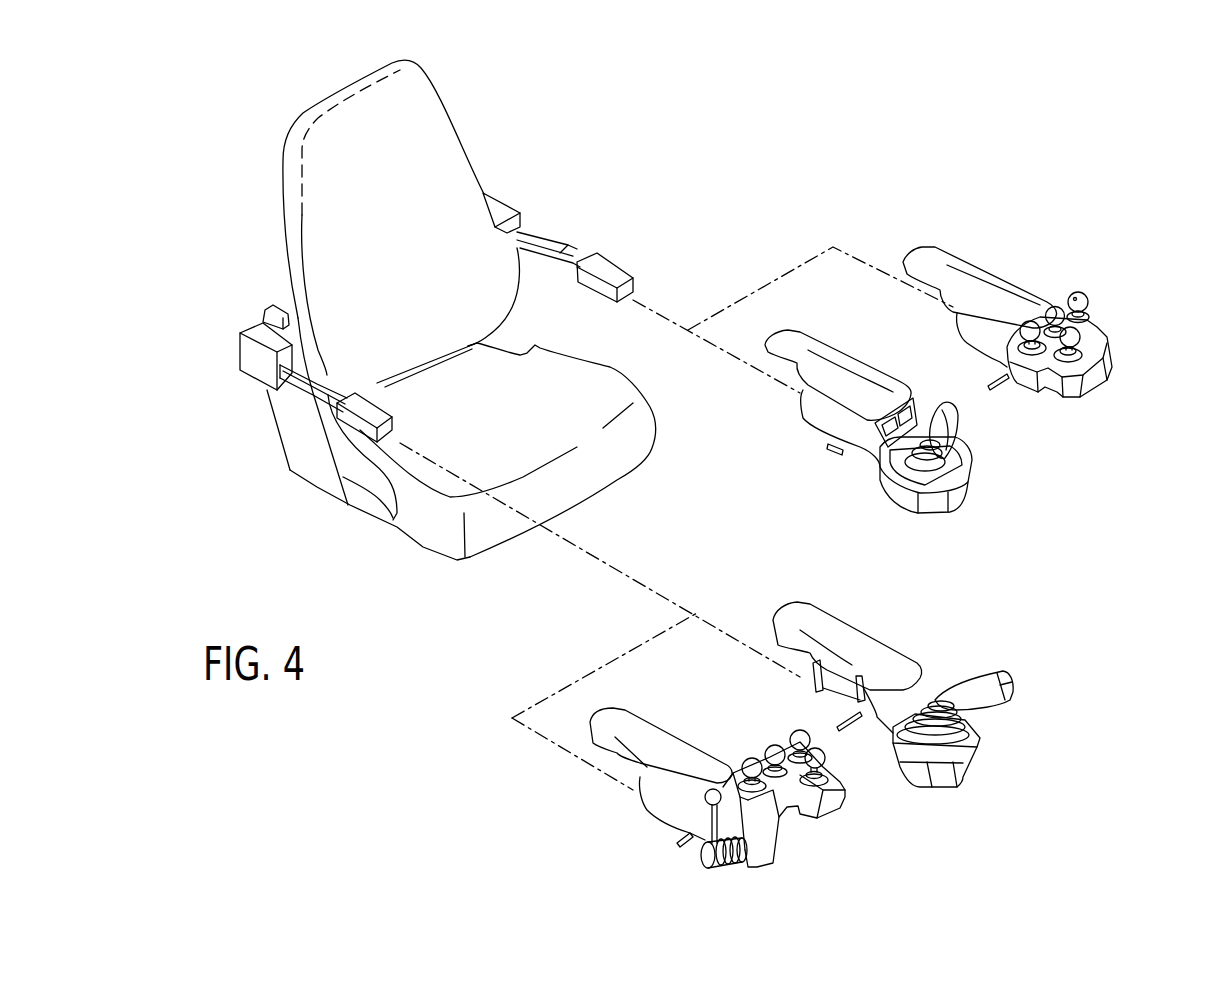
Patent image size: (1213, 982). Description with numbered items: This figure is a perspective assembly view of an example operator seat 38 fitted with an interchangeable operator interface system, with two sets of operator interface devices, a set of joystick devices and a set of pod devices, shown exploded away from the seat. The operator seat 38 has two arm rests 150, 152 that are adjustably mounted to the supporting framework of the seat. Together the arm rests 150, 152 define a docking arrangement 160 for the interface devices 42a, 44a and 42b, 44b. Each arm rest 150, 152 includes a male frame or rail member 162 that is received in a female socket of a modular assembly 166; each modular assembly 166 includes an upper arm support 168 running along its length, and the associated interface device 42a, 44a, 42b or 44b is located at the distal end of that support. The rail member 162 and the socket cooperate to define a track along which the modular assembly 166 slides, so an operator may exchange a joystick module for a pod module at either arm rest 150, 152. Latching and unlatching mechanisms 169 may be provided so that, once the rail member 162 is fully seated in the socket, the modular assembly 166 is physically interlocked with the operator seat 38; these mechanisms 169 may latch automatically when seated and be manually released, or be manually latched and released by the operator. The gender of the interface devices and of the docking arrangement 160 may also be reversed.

The operator seat 38 is at (466, 129).
The arm rest 150 is at (538, 232).
The arm rest 152 is at (322, 403).
The docking arrangement 160 is at (603, 230).
The rail member 162 is at (598, 288).
The modular assembly 166 is at (998, 511).
The upper arm support 168 is at (812, 347).
The latching and unlatching mechanism 169 is at (824, 448).
The interface device 42a is at (958, 437).
The interface device 42b is at (1100, 312).
The interface device 44a is at (960, 675).
The interface device 44b is at (793, 830).